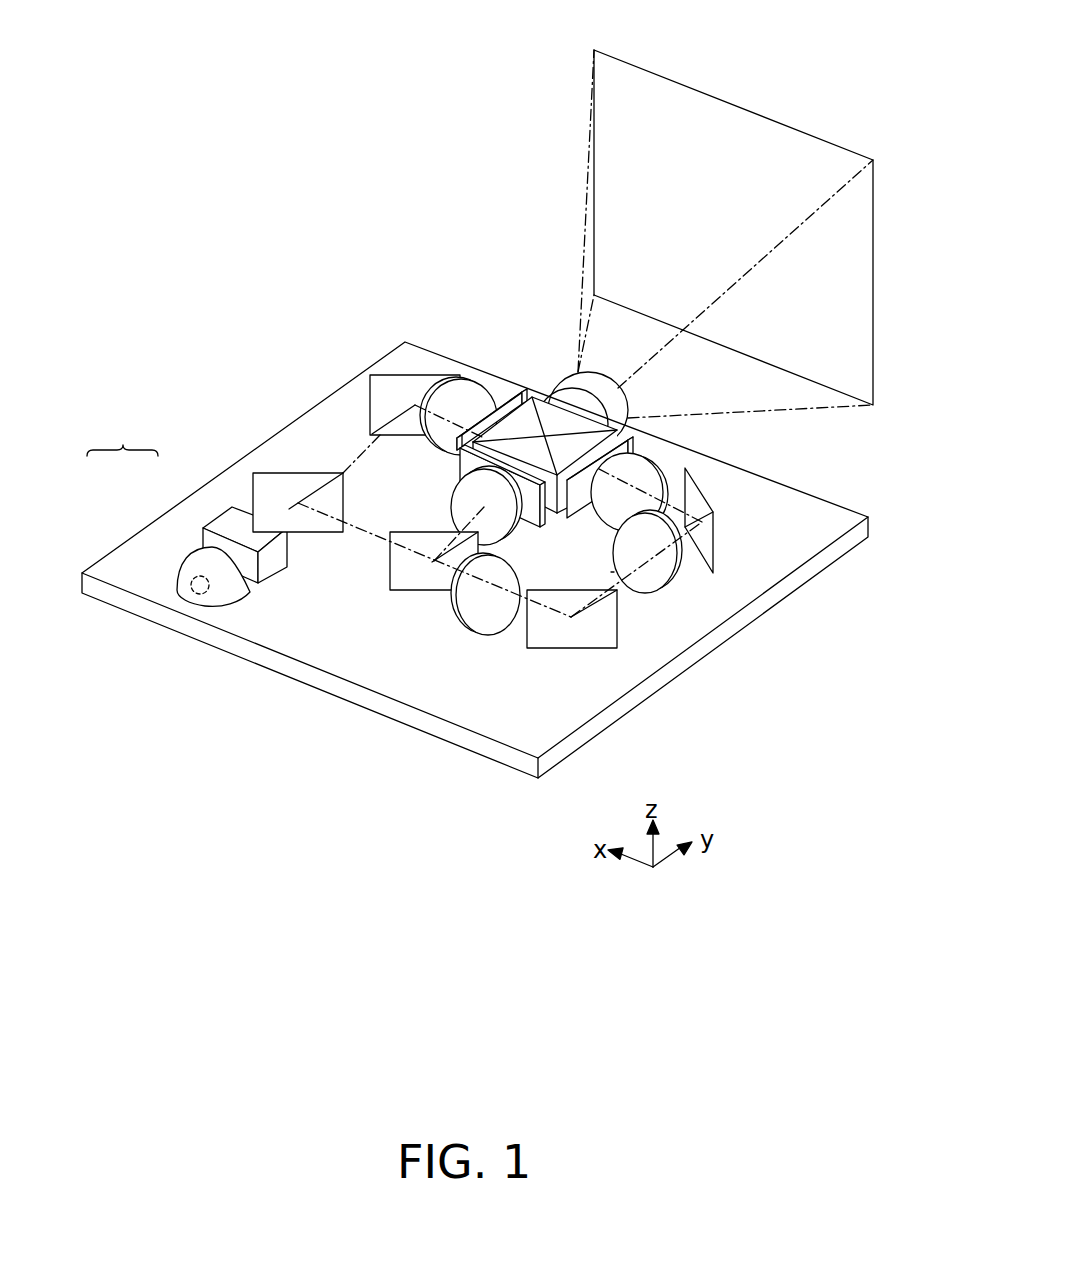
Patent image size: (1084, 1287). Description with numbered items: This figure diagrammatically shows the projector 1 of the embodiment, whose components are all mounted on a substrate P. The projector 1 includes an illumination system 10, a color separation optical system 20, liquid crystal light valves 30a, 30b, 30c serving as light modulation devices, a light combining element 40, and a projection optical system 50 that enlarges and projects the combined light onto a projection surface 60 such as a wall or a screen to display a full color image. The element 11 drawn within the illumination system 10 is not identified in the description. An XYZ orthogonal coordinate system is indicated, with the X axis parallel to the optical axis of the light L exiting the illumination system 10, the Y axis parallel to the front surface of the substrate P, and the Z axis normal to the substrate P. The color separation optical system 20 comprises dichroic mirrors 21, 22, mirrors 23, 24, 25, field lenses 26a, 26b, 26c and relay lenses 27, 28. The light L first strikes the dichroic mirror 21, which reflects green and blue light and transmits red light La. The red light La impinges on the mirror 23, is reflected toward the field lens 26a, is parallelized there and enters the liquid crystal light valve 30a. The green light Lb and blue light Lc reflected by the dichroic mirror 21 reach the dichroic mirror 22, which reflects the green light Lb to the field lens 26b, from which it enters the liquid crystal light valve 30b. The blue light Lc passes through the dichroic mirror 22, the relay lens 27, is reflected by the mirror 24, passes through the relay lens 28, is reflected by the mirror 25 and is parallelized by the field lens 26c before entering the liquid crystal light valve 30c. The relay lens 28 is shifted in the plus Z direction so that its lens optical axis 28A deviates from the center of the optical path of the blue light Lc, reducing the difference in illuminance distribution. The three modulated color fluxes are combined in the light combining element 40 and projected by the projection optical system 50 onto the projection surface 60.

The projector 1 is at (477, 414).
The illumination system 10 is at (122, 437).
The light source lamp 11 is at (185, 558).
The projection optical system 50 is at (567, 390).
The color separation optical system 20 is at (478, 382).
The dichroic mirror 21 is at (258, 475).
The dichroic mirror 22 is at (402, 589).
The mirror 23 is at (380, 380).
The mirror 24 is at (545, 639).
The mirror 25 is at (700, 502).
The field lens 26a is at (467, 380).
The field lens 26b is at (453, 487).
The field lens 26c is at (650, 473).
The relay lens 27 is at (470, 628).
The relay lens 28 is at (657, 588).
The lens optical axis 28A is at (611, 572).
The liquid crystal light valve 30a is at (517, 388).
The liquid crystal light valve 30b is at (541, 521).
The liquid crystal light valve 30c is at (633, 448).
The light combining element 40 is at (537, 402).
The projection surface 60 is at (604, 173).
The substrate P is at (753, 612).
The light L is at (288, 510).
The red light La is at (353, 457).
The green light Lb is at (440, 540).
The blue light Lc is at (618, 608).